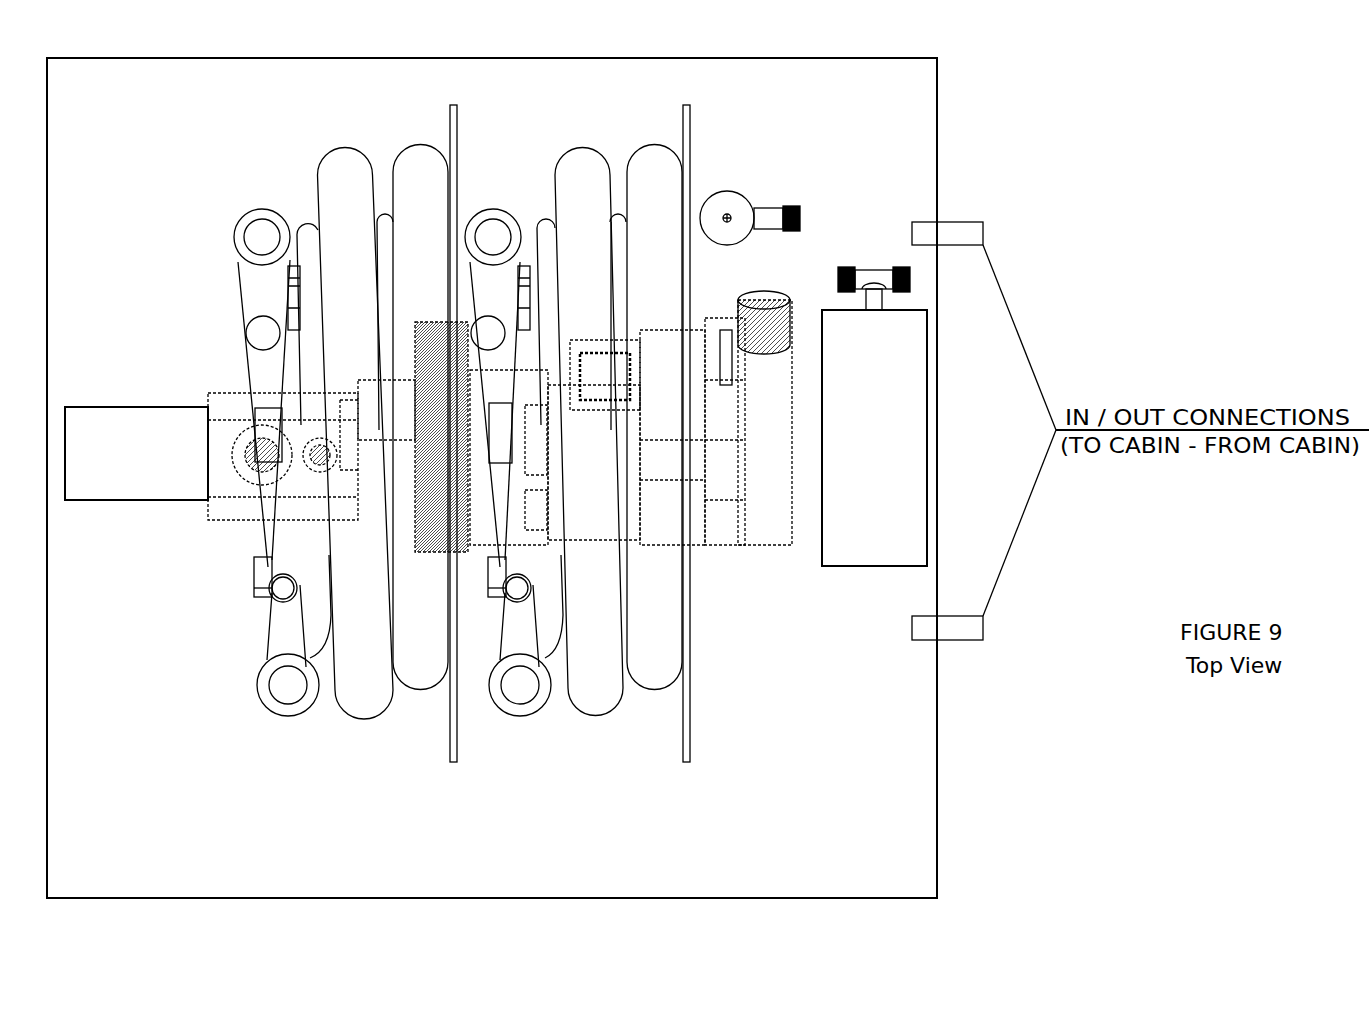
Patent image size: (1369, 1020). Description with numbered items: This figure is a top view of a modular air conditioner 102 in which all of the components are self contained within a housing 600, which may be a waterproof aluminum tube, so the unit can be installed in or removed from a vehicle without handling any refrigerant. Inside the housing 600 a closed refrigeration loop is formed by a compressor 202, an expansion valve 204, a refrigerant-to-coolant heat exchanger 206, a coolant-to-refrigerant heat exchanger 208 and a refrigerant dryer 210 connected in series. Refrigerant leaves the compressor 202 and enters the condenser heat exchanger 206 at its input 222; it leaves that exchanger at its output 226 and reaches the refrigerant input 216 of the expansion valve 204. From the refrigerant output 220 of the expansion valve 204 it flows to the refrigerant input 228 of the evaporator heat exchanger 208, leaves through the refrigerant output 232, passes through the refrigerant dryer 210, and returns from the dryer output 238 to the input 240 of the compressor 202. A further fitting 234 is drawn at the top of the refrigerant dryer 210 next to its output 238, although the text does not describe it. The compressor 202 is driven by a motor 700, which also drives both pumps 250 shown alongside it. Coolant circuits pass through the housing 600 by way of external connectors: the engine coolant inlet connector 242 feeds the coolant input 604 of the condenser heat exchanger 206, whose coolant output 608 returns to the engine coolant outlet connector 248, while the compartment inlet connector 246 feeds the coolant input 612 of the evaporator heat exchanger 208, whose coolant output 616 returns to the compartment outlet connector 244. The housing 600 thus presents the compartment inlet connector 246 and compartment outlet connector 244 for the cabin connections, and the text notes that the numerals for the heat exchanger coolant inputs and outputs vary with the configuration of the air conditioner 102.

The air conditioner 102 is at (1072, 97).
The housing 600 is at (937, 178).
The compressor 202 is at (785, 431).
The expansion valve 204 is at (725, 194).
The refrigerant-to-coolant heat exchanger 206 is at (618, 673).
The coolant-to-refrigerant heat exchanger 208 is at (381, 668).
The refrigerant dryer 210 is at (878, 451).
The refrigerant input of the expansion valve 216 is at (798, 208).
The refrigerant output of the expansion valve 220 is at (729, 216).
The input of the condenser heat exchanger 222 is at (485, 330).
The output of the condenser heat exchanger 226 is at (512, 603).
The refrigerant input of the evaporator heat exchanger 228 is at (277, 603).
The refrigerant output of the evaporator heat exchanger 232 is at (258, 333).
The valve stub 234 is at (888, 292).
The output of the refrigerant dryer 238 is at (842, 268).
The input of the compressor 240 is at (760, 292).
The engine coolant inlet connector 242 is at (557, 712).
The compartment outlet connector 244 is at (972, 232).
The compartment inlet connector 246 is at (972, 630).
The engine coolant outlet connector 248 is at (323, 712).
The pumps 250 is at (135, 420).
The coolant input of the condenser heat exchanger 604 is at (516, 713).
The coolant output of the condenser heat exchanger 608 is at (484, 232).
The coolant input of the evaporator heat exchanger 612 is at (265, 225).
The coolant output of the evaporator heat exchanger 616 is at (282, 713).
The motor 700 is at (213, 397).